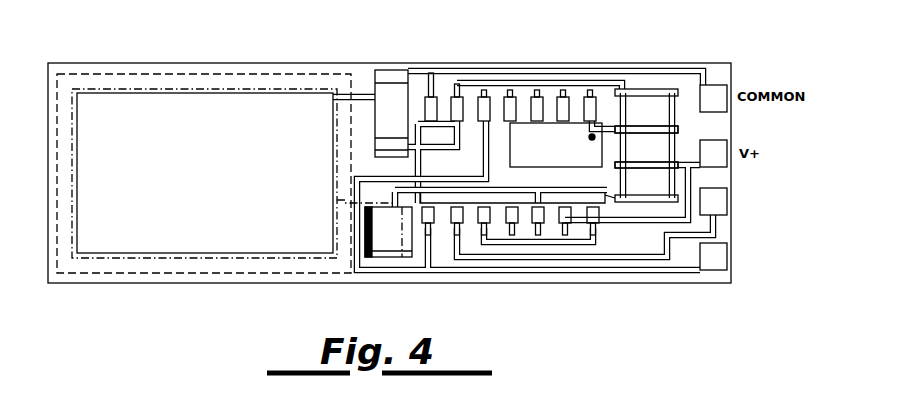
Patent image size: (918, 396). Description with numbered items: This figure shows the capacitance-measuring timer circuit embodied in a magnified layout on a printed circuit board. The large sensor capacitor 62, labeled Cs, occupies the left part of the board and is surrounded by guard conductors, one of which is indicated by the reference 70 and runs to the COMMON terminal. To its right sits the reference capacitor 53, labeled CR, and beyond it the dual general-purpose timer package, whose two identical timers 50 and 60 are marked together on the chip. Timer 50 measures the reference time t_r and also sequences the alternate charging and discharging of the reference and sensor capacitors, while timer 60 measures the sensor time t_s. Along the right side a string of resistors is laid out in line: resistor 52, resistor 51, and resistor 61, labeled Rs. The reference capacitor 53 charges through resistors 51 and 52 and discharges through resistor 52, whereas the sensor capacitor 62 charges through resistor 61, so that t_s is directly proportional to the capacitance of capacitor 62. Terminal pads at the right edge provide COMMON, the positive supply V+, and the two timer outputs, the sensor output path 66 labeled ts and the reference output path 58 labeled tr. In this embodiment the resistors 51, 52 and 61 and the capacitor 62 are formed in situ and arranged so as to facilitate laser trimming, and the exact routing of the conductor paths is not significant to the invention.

The sensor capacitor 62 is at (232, 143).
The guard shield trace 70 is at (342, 77).
The reference capacitor 53 is at (393, 98).
The timer 50 is at (512, 129).
The timer 60 is at (523, 133).
The resistor 52 is at (660, 102).
The resistor 51 is at (667, 148).
The resistor 61 is at (637, 188).
The output path 66 is at (713, 202).
The output path 58 is at (713, 257).